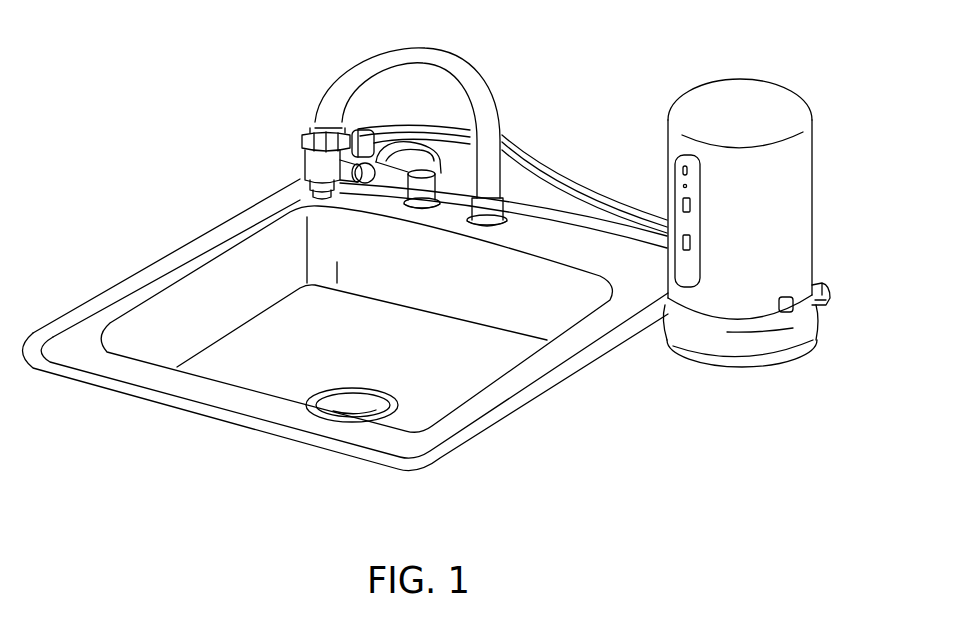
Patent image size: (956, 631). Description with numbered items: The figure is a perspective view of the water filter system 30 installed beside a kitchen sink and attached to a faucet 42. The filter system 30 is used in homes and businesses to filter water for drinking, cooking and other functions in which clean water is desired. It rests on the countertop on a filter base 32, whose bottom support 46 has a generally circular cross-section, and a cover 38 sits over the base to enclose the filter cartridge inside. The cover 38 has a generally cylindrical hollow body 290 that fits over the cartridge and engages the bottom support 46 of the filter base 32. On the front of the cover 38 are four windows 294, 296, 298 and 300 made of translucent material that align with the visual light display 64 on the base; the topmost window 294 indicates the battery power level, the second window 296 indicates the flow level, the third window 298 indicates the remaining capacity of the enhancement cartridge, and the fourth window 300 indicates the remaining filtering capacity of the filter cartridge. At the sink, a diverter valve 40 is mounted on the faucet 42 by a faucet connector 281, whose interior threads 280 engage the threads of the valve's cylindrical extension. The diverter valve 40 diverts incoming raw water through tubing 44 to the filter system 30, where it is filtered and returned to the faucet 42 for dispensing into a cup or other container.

The filter system 30 is at (725, 220).
The filter base 32 is at (777, 367).
The cover 38 is at (725, 190).
The diverter valve 40 is at (288, 134).
The faucet 42 is at (374, 73).
The tubing 44 is at (547, 150).
The bottom support 46 is at (717, 358).
The visual light display 64 is at (689, 226).
The threads 280 is at (317, 131).
The faucet connector 281 is at (303, 142).
The cylindrical hollow body 290 is at (760, 102).
The first window 294 is at (682, 170).
The second window 296 is at (689, 186).
The third window 298 is at (692, 208).
The fourth window 300 is at (694, 248).